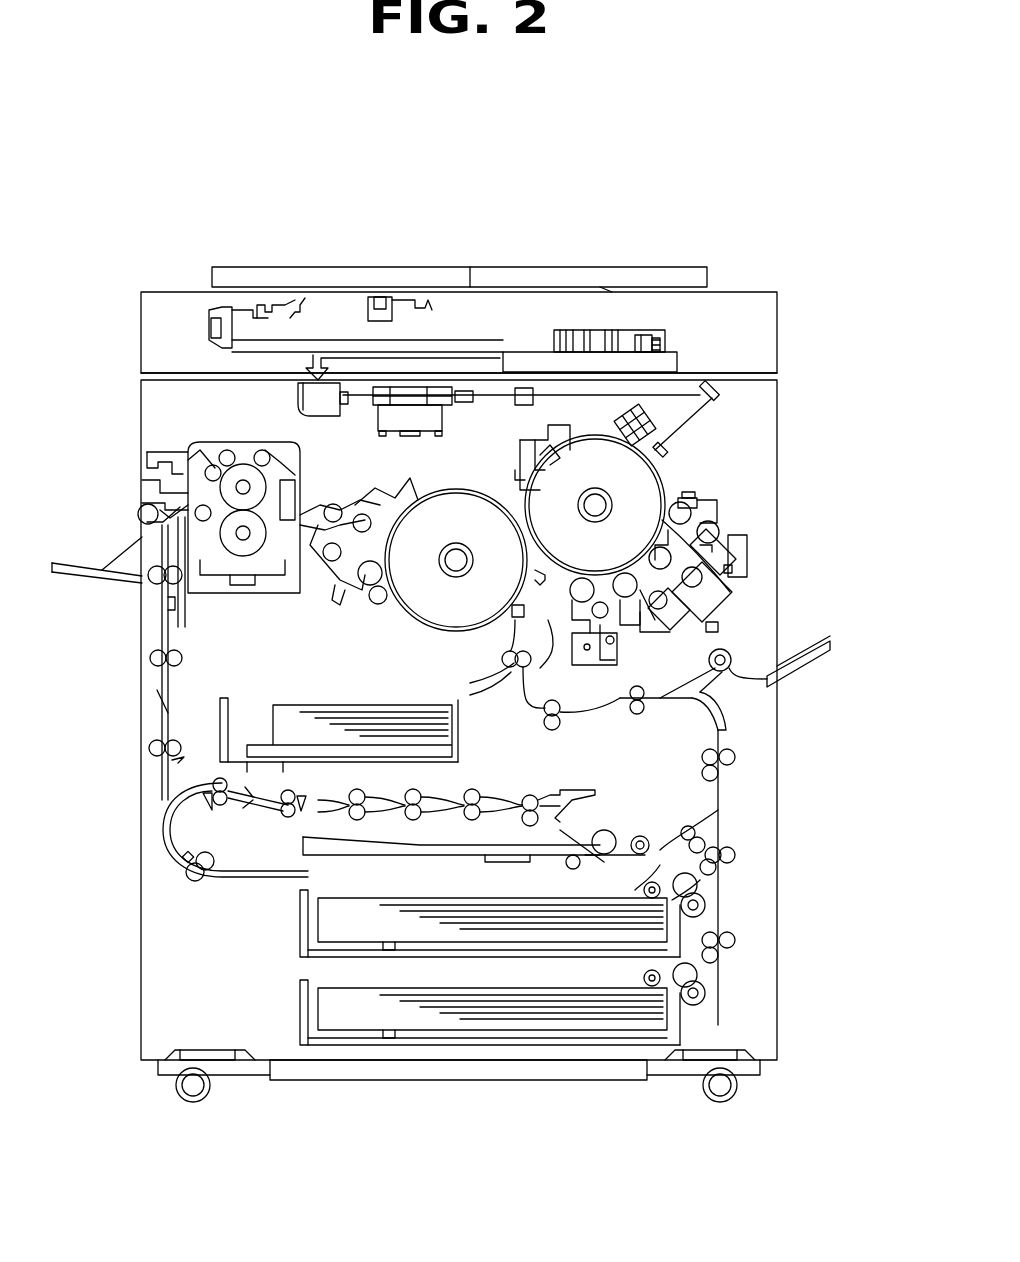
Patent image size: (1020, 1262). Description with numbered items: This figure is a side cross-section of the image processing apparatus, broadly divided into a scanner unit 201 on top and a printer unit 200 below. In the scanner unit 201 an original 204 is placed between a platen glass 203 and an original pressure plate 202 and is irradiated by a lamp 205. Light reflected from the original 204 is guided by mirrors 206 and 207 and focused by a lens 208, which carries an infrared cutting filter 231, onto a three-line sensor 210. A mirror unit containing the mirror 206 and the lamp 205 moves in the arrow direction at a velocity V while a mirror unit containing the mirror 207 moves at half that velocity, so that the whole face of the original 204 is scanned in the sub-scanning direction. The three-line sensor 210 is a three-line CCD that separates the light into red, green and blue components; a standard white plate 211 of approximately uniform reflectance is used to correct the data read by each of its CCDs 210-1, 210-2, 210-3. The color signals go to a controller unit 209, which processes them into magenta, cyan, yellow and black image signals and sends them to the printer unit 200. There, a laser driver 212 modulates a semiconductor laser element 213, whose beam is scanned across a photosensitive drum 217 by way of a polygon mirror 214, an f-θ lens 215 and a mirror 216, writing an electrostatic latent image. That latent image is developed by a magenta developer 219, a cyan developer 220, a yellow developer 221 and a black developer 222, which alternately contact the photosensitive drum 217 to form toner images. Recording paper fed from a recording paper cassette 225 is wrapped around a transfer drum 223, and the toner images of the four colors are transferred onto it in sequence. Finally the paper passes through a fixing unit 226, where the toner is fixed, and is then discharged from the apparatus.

The printer unit 200 is at (857, 594).
The scanner unit 201 is at (857, 344).
The original pressure plate 202 is at (525, 287).
The platen glass 203 is at (605, 292).
The original 204 is at (472, 290).
The lamp 205 is at (378, 300).
The mirror 206 is at (412, 305).
The mirror 207 is at (205, 312).
The lens 208 is at (644, 335).
The controller unit 209 is at (667, 362).
The 3-line sensor 210 is at (665, 338).
The CCD 210-1 is at (662, 340).
The CCD 210-2 is at (662, 345).
The CCD 210-3 is at (662, 350).
The standard white plate 211 is at (262, 305).
The laser driver 212 is at (298, 403).
The semiconductor laser element 213 is at (348, 410).
The polygon mirror 214 is at (445, 411).
The f-θ lens 215 is at (533, 405).
The mirror 216 is at (715, 400).
The photosensitive drum 217 is at (665, 478).
The magenta developer 219 is at (612, 628).
The cyan developer 220 is at (695, 583).
The yellow developer 221 is at (690, 500).
The black developer 222 is at (520, 663).
The transfer drum 223 is at (420, 620).
The recording paper cassette 225 is at (660, 1035).
The fixing unit 226 is at (243, 593).
The infrared cutting filter 231 is at (562, 330).